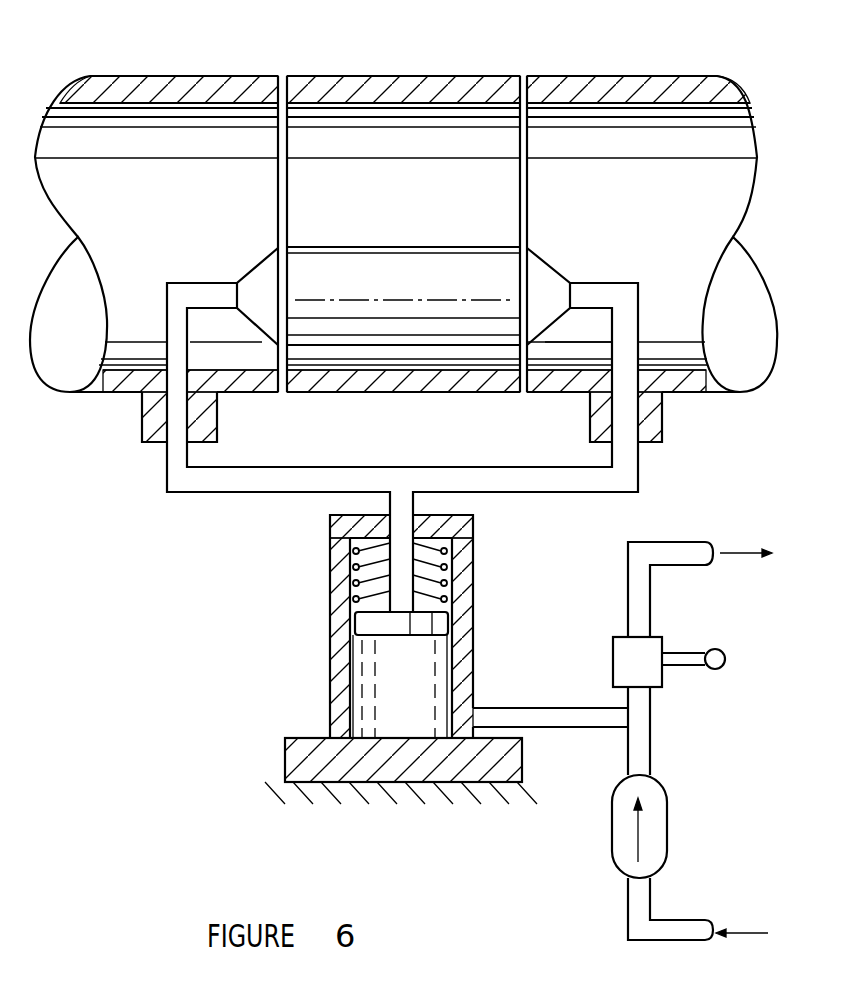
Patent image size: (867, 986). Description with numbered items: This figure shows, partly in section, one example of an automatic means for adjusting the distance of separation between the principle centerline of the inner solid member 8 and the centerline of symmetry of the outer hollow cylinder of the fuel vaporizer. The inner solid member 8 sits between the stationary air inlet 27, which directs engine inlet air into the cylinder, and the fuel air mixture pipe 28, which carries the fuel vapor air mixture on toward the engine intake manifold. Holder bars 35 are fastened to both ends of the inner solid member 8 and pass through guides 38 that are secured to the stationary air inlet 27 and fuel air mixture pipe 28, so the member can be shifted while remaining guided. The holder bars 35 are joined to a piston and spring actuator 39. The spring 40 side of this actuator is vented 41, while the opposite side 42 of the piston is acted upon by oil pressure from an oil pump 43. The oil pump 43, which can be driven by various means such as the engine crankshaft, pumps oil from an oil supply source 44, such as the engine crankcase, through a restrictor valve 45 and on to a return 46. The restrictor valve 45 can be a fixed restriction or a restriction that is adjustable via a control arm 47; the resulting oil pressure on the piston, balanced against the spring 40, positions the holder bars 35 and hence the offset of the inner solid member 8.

The inner solid member 8 is at (393, 278).
The air inlet 27 is at (120, 76).
The fuel air mixture pipe 28 is at (618, 78).
The holder bars 35 is at (177, 323).
The guides 38 is at (217, 420).
The piston and spring actuator 39 is at (375, 668).
The spring 40 is at (443, 578).
The vent 41 is at (363, 528).
The opposite side of the piston 42 is at (400, 638).
The oil pump 43 is at (620, 829).
The oil supply source 44 is at (752, 930).
The restrictor valve 45 is at (663, 682).
The return 46 is at (727, 552).
The control arm 47 is at (727, 658).